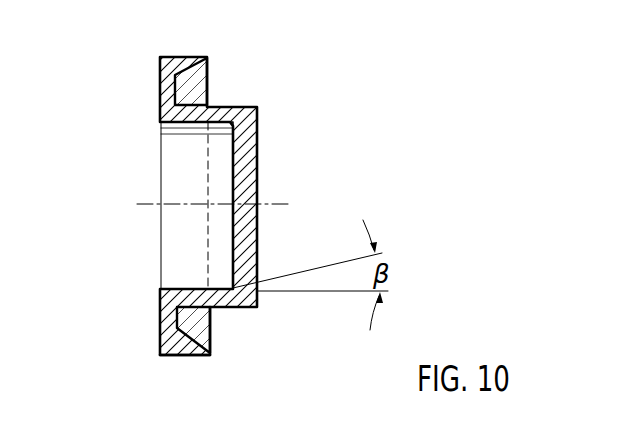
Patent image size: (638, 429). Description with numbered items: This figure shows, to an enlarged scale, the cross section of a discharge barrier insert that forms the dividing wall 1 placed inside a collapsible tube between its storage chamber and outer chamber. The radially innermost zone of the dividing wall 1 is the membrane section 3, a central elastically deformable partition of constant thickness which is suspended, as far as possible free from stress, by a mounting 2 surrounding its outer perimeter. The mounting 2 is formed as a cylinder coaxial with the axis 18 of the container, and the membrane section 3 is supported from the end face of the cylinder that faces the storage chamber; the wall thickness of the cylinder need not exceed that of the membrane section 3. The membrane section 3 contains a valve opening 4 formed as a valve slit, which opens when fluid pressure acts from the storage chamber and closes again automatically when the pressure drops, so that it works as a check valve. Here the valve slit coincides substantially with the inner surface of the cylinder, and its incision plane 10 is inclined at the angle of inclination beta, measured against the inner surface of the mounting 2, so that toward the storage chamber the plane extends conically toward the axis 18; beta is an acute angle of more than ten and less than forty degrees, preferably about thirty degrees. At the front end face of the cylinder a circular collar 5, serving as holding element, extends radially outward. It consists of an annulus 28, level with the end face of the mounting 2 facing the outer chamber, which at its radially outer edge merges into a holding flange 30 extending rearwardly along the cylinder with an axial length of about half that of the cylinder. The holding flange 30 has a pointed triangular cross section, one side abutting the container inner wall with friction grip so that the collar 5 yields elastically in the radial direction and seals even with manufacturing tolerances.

The dividing wall 1 is at (171, 272).
The mounting 2 is at (224, 107).
The membrane section 3 is at (257, 182).
The valve opening 4 is at (233, 126).
The circular collar 5 is at (154, 76).
The incision plane 10 is at (247, 307).
The axis 18 is at (288, 204).
The annulus 28 is at (163, 323).
The holding flange 30 is at (185, 357).